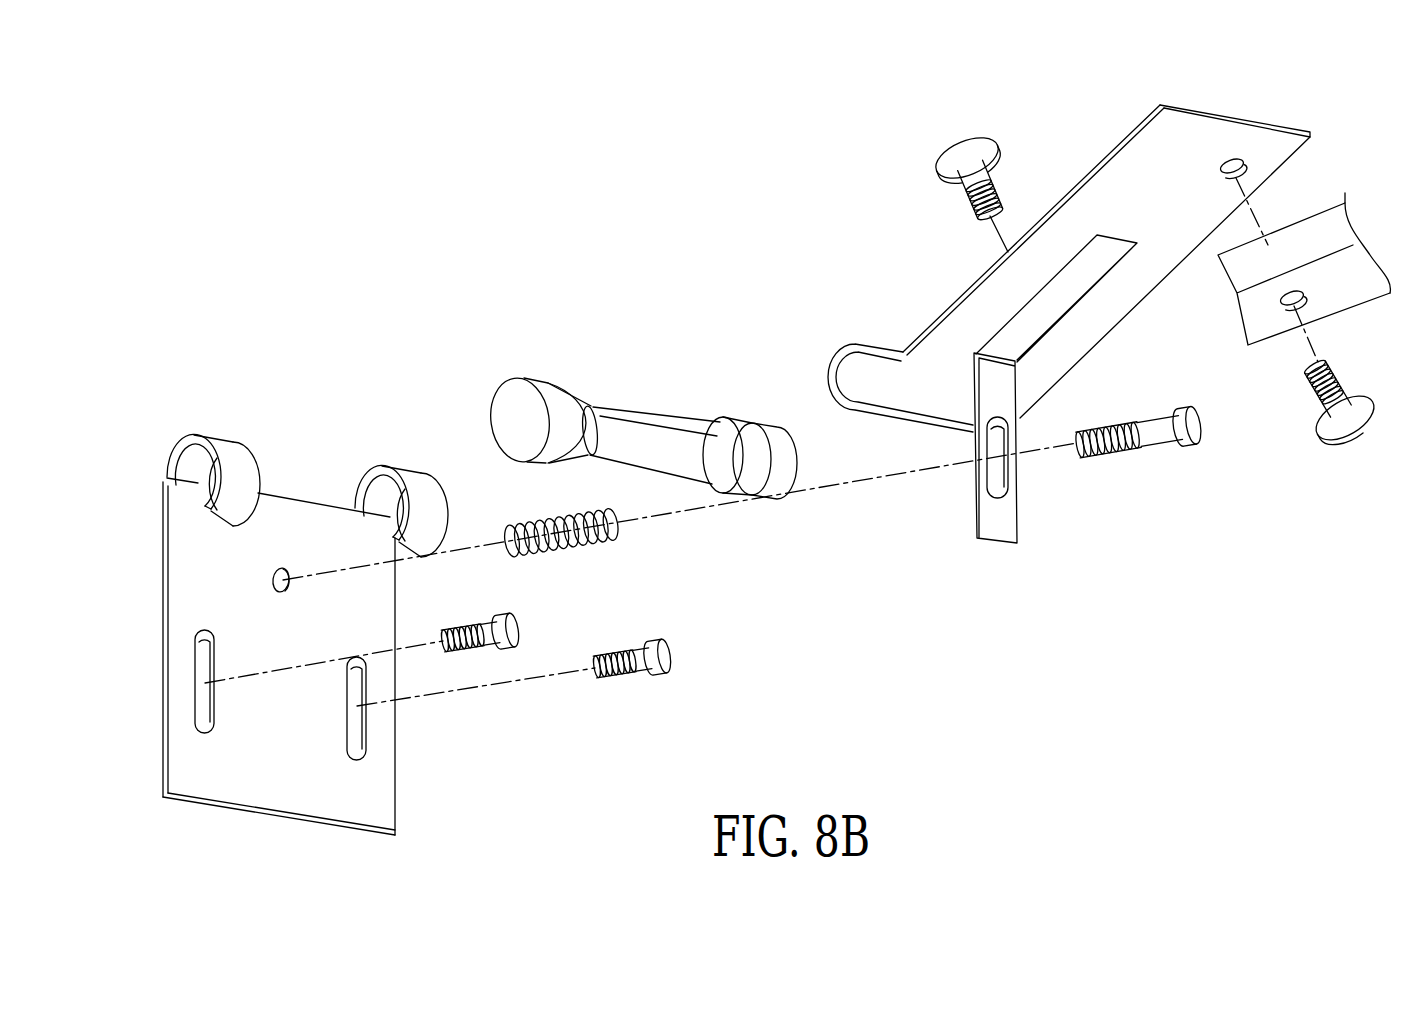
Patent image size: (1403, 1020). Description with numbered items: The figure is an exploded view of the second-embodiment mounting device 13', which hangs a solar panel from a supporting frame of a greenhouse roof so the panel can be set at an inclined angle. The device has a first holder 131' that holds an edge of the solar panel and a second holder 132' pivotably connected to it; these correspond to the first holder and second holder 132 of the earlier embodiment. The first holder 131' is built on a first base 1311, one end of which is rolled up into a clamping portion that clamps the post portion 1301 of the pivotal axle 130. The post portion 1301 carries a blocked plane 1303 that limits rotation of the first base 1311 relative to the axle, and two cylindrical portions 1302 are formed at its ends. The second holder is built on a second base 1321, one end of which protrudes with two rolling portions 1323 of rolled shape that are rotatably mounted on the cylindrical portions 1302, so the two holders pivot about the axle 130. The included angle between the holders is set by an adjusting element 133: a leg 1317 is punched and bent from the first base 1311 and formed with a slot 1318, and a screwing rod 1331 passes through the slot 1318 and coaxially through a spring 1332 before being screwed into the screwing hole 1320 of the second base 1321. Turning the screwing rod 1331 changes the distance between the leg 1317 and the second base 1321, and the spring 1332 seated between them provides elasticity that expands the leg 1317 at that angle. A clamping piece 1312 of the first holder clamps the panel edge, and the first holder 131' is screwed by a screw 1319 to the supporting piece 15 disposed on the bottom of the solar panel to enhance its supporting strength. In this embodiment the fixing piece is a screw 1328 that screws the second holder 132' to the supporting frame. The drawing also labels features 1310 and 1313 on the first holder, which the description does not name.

The mounting device 13' is at (259, 131).
The second holder 132' is at (620, 604).
The second holder 132 is at (620, 639).
The second base 1321 is at (283, 773).
The screwing hole 1320 is at (291, 582).
The rolling portions 1323 is at (417, 481).
The screw 1328 is at (480, 656).
The pivotal axle 130 is at (508, 366).
The post portion 1301 is at (658, 457).
The cylindrical portions 1302 is at (572, 405).
The blocked plane 1303 is at (660, 426).
The adjusting element 133 is at (603, 600).
The spring 1332 is at (567, 552).
The screwing rod 1331 is at (1148, 439).
The first holder 131' is at (1069, 342).
The first base 1311 is at (1112, 297).
The opening 1310 is at (1033, 313).
The hook 1313 is at (880, 350).
The leg 1317 is at (1010, 520).
The slot 1318 is at (997, 474).
The clamping piece 1312 is at (963, 198).
The supporting piece 15 is at (1337, 291).
The screw 1319 is at (1345, 429).